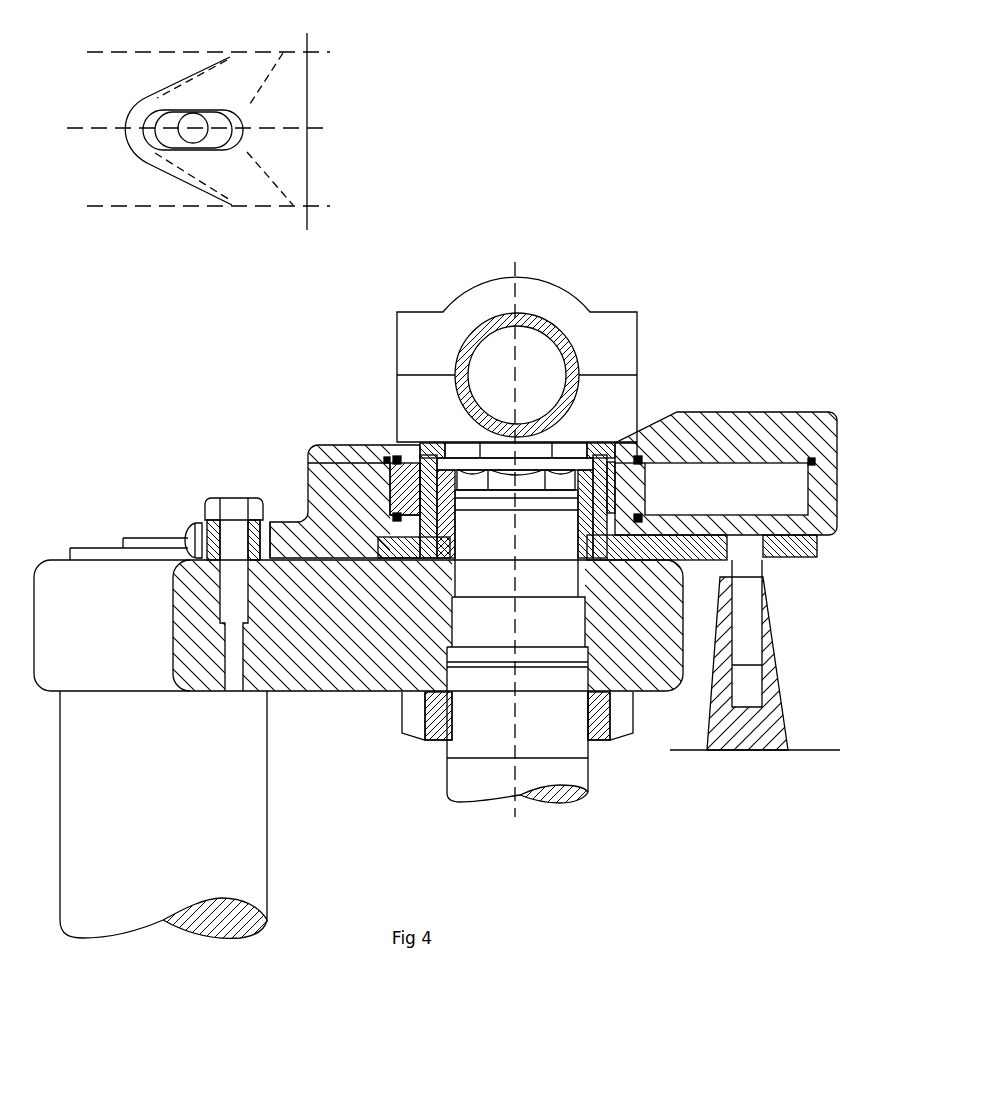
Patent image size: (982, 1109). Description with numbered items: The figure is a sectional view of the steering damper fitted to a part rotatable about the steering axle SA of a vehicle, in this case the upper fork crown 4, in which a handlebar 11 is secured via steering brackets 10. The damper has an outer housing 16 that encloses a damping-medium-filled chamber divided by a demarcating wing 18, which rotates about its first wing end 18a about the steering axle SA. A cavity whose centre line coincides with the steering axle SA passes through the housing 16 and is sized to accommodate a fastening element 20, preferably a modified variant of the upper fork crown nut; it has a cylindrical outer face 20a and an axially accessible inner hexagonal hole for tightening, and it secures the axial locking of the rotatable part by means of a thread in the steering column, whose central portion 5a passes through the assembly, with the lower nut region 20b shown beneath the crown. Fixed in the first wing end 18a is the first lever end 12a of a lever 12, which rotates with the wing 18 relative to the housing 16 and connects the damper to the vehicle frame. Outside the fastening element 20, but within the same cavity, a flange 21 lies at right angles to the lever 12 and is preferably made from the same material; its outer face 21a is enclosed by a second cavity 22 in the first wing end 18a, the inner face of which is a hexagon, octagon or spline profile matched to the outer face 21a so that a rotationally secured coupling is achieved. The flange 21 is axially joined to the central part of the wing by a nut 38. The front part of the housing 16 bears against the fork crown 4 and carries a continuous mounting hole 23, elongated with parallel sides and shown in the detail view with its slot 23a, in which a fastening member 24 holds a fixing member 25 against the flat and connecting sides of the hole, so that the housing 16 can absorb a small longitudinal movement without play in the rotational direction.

The steering axle SA is at (520, 262).
The upper fork crown 4 is at (200, 593).
The shaft 5a is at (528, 530).
The steering bracket 10 is at (573, 322).
The handlebar 11 is at (482, 320).
The lever 12 is at (790, 558).
The first lever end 12a is at (392, 515).
The outer housing 16 is at (838, 470).
The demarcating wing 18 is at (636, 447).
The first wing end 18a is at (385, 460).
The fastening element 20 is at (400, 447).
The cylindrical outer face 20a is at (383, 452).
The nut 20b is at (447, 543).
The flange 21 is at (725, 418).
The outer face of the flange 21a is at (665, 470).
The second cavity 22 is at (477, 462).
The mounting hole 23 is at (152, 117).
The slot 23a is at (192, 110).
The fastening member 24 is at (193, 123).
The fixing member 25 is at (220, 120).
The nut 38 is at (428, 442).